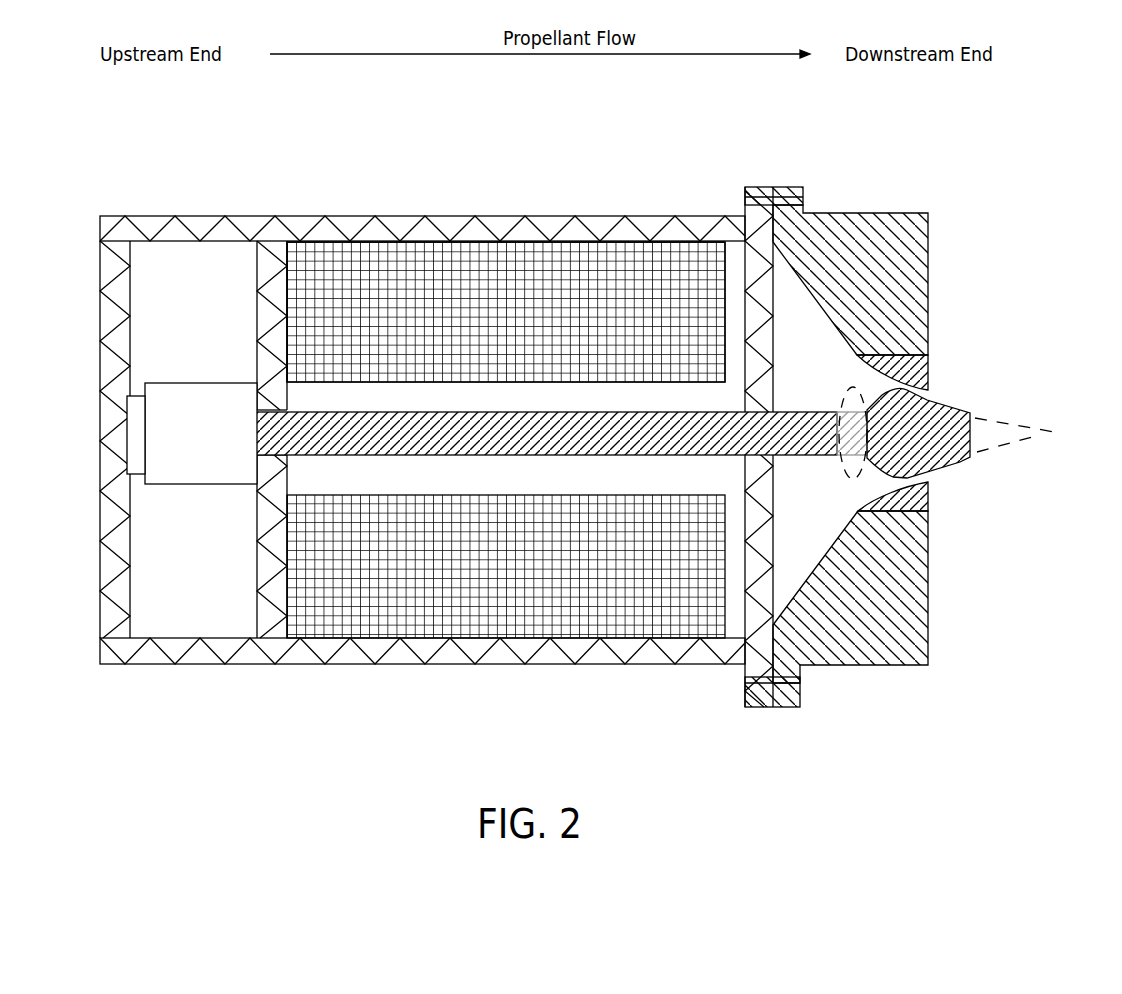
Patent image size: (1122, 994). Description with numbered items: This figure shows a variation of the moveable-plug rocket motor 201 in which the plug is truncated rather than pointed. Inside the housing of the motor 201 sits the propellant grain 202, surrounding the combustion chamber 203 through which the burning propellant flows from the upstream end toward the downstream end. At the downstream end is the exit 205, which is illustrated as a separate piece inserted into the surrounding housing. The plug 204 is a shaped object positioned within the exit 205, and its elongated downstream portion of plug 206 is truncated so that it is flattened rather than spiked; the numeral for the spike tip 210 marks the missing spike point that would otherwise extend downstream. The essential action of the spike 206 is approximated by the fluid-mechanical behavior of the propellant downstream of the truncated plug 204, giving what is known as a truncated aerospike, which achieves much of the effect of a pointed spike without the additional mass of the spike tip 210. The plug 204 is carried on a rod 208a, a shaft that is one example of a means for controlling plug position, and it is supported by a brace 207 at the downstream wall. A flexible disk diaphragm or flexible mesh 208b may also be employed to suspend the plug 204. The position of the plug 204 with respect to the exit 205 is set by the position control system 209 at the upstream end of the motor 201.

The motor 201 is at (353, 230).
The grain 202 is at (455, 300).
The combustion chamber 203 is at (727, 395).
The plug 204 is at (877, 400).
The exit 205 is at (902, 356).
The elongated downstream portion of plug 206 is at (952, 410).
The brace 207 is at (757, 588).
The rod 208a is at (512, 435).
The flexible disk diaphragm or flexible mesh 208b is at (843, 460).
The position control system 209 is at (187, 493).
The spike tip 210 is at (1008, 447).